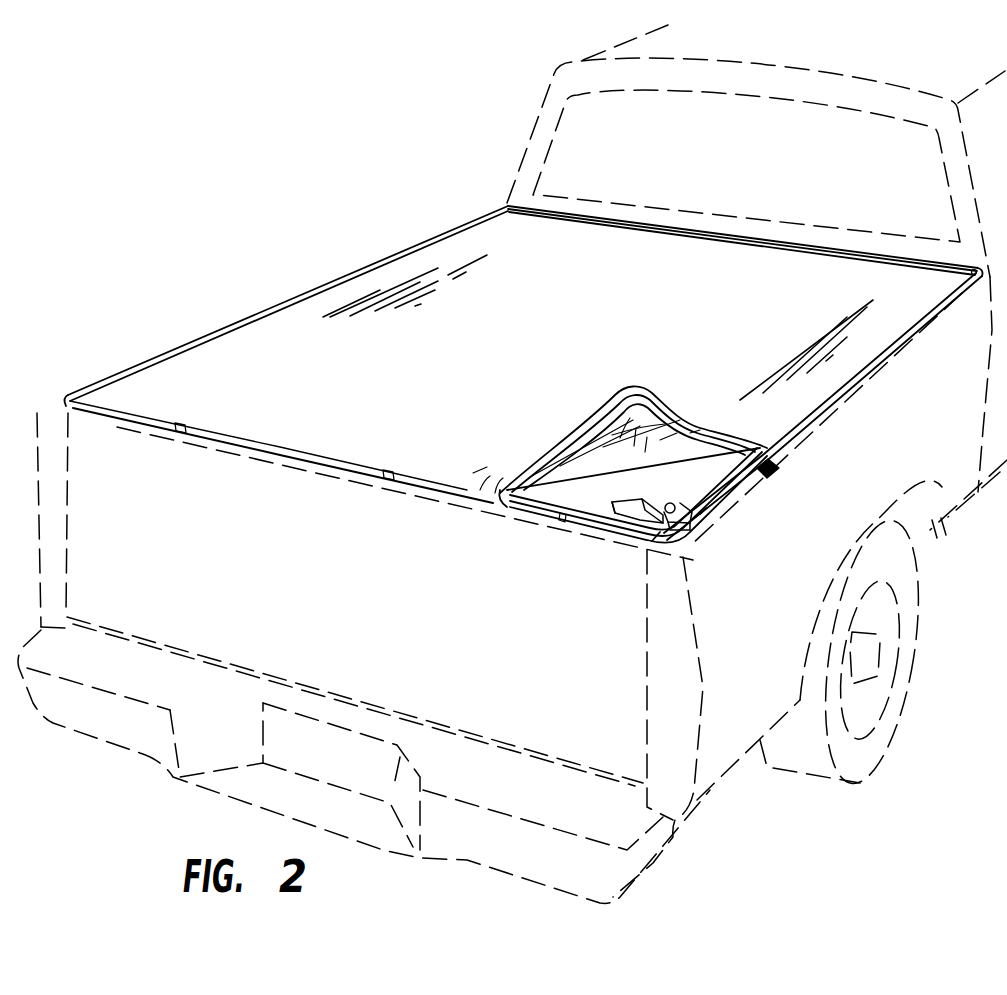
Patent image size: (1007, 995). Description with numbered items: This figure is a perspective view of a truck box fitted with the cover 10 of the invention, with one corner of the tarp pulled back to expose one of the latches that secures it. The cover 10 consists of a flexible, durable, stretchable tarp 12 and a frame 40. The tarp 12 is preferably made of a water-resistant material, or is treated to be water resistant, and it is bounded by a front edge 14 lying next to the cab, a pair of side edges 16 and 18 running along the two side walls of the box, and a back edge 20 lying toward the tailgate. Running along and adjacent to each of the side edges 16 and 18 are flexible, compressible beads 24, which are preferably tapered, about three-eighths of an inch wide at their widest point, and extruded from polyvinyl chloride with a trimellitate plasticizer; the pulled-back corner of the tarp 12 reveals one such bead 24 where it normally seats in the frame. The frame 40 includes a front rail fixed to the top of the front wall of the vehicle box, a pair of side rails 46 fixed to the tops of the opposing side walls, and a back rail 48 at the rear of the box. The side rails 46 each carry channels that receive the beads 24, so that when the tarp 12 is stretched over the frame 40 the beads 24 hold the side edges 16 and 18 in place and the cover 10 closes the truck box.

The cover 10 is at (300, 258).
The tarp 12 is at (527, 351).
The front edge 14 is at (727, 237).
The side edge 16 is at (173, 347).
The side edge 18 is at (857, 380).
The back edge 20 is at (260, 444).
The flexible, compressible bead 24 is at (675, 411).
The frame 40 is at (779, 464).
The side rail 46 is at (718, 500).
The back rail 48 is at (578, 510).